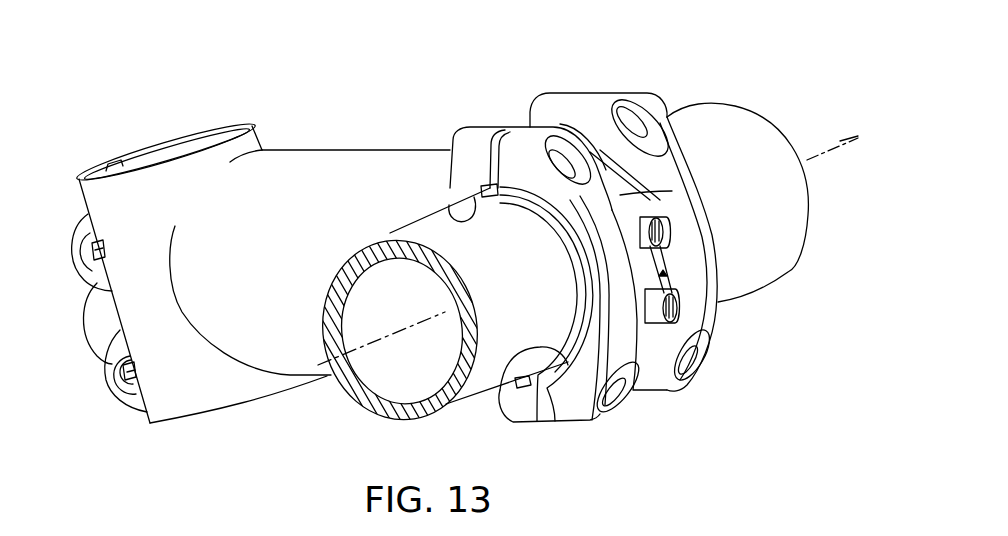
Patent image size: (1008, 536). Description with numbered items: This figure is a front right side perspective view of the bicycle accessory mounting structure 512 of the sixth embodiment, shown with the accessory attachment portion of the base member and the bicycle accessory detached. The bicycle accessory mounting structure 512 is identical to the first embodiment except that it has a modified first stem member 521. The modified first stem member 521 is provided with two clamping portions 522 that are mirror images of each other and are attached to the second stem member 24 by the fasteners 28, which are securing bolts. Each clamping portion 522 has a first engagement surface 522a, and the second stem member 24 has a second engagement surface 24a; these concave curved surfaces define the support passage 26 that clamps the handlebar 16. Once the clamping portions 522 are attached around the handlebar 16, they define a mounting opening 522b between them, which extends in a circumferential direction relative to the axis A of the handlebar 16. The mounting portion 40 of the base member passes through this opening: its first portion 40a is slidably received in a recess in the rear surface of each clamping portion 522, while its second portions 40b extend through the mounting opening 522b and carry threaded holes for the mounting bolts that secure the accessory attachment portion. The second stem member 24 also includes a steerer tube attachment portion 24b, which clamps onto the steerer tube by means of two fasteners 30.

The handlebar 16 is at (390, 233).
The second stem member 24 is at (353, 146).
The second engagement surface 24a is at (446, 212).
The steerer tube attachment portion 24b is at (173, 141).
The support passage 26 is at (552, 292).
The fasteners 28 is at (597, 115).
The fasteners 30 is at (109, 313).
The mounting portion 40 is at (657, 282).
The first portion 40a is at (653, 248).
The second portions 40b is at (665, 221).
The bicycle accessory mounting structure 512 is at (686, 72).
The modified first stem member 521 is at (705, 169).
The clamping portions 522 is at (517, 150).
The first engagement surface 522a is at (513, 389).
The mounting opening 522b is at (672, 191).
The axis A is at (849, 141).